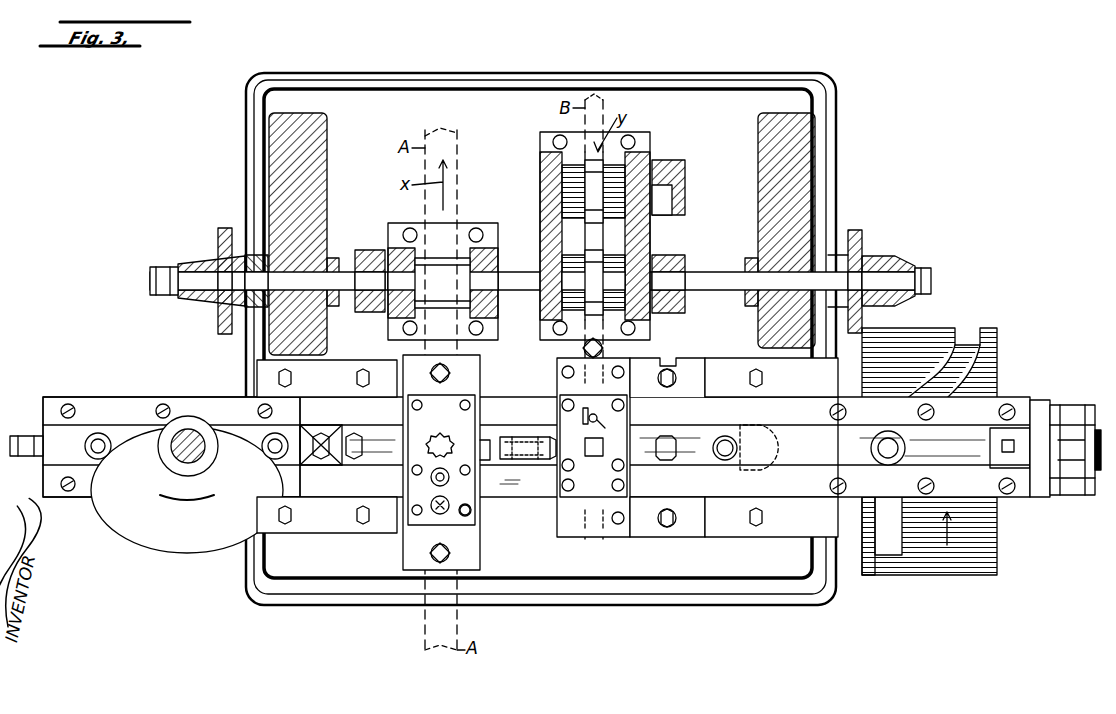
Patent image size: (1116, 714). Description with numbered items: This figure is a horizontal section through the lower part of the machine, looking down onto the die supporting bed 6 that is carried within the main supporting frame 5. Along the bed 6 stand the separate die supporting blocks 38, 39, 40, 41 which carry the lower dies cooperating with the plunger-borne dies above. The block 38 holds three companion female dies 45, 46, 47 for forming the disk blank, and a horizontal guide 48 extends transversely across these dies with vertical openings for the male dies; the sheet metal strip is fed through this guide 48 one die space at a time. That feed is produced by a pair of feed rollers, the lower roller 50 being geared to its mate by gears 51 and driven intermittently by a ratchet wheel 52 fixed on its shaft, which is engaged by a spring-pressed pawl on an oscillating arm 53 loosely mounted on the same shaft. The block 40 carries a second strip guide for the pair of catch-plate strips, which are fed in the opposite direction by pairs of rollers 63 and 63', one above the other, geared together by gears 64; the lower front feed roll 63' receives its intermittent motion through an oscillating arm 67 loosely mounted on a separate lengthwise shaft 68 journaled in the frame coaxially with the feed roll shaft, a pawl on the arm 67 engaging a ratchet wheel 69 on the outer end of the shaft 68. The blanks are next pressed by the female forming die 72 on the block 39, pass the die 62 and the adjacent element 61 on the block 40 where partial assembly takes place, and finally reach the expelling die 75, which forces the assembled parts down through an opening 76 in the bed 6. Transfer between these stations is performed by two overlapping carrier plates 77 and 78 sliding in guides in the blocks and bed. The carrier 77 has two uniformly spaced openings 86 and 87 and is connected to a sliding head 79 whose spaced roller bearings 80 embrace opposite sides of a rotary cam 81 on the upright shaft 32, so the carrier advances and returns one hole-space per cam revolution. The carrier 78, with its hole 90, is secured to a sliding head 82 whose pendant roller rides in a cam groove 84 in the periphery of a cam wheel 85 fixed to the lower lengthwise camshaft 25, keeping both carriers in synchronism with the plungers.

The main supporting frame 5 is at (327, 142).
The die supporting bed 6 is at (738, 572).
The lower lengthwise camshaft 25 is at (1098, 482).
The upright shaft 32 is at (188, 430).
The die supporting block 38 is at (415, 495).
The die supporting block 39 is at (538, 527).
The die supporting block 40 is at (614, 538).
The die supporting block 41 is at (692, 527).
The female die 45 is at (432, 507).
The female die 46 is at (432, 477).
The female die 47 is at (432, 446).
The guide 48 is at (458, 508).
The feed roller 50 is at (210, 300).
The gears 51 is at (370, 250).
The ratchet wheel 52 is at (225, 228).
The oscillating arm 53 is at (203, 258).
The pin 61 is at (603, 423).
The die 62 is at (580, 442).
The roller 63 is at (578, 236).
The lower front feed roll 63' is at (565, 282).
The gears 64 is at (677, 215).
The oscillating arm 67 is at (882, 258).
The lengthwise shaft 68 is at (714, 272).
The ratchet wheel 69 is at (855, 232).
The female forming die 72 is at (517, 440).
The expelling die 75 is at (906, 448).
The opening 76 is at (762, 445).
The carrier plate 77 is at (380, 438).
The carrier plate 78 is at (686, 438).
The sliding head 79 is at (74, 437).
The roller bearings 80 is at (100, 436).
The rotary cam 81 is at (178, 548).
The sliding head 82 is at (730, 440).
The cam groove 84 is at (888, 560).
The cam wheel 85 is at (945, 574).
The opening 86 is at (485, 440).
The opening 87 is at (542, 458).
The opening 90 is at (678, 448).